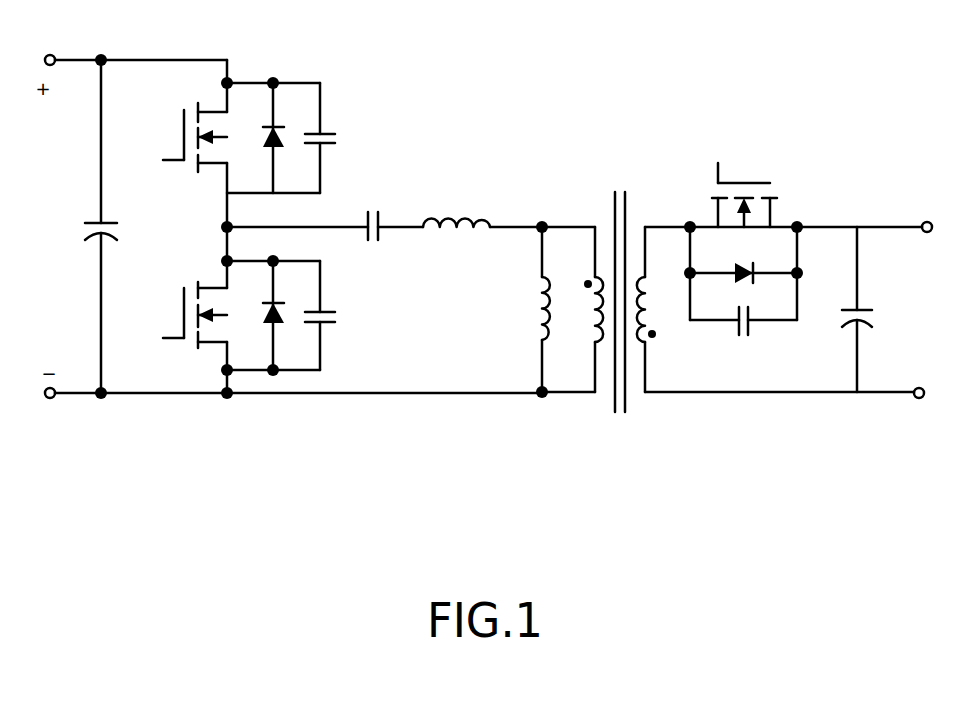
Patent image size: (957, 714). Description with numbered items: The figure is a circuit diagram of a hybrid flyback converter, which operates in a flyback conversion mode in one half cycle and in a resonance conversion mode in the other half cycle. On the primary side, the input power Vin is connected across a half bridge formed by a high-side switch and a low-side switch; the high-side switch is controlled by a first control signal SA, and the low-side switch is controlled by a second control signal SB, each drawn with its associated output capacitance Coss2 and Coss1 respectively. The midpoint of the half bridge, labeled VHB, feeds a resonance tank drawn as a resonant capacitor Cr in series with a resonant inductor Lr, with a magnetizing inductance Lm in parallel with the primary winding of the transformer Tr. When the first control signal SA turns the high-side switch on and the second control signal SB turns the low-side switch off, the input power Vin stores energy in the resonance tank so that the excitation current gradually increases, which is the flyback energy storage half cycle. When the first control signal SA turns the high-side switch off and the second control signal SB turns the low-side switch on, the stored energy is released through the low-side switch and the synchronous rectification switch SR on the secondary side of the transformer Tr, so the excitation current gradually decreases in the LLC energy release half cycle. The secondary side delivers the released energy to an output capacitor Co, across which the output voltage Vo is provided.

The input power Vin is at (77, 226).
The first control signal SA is at (213, 138).
The second control signal SB is at (214, 315).
The output capacitance of switch A Coss2 is at (348, 138).
The output capacitance of switch B Coss1 is at (348, 315).
The half-bridge node voltage VHB is at (274, 240).
The resonant capacitor Cr is at (390, 212).
The resonant inductor Lr is at (509, 207).
The magnetizing inductance Lm is at (527, 310).
The transformer Tr is at (593, 302).
The synchronous rectification switch SR is at (743, 236).
The output capacitor Co is at (842, 309).
The output voltage Vo is at (923, 310).